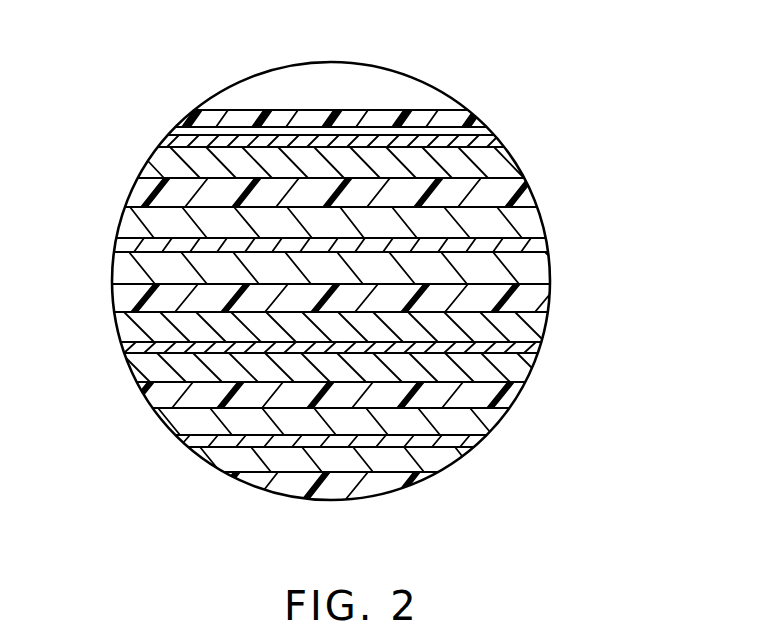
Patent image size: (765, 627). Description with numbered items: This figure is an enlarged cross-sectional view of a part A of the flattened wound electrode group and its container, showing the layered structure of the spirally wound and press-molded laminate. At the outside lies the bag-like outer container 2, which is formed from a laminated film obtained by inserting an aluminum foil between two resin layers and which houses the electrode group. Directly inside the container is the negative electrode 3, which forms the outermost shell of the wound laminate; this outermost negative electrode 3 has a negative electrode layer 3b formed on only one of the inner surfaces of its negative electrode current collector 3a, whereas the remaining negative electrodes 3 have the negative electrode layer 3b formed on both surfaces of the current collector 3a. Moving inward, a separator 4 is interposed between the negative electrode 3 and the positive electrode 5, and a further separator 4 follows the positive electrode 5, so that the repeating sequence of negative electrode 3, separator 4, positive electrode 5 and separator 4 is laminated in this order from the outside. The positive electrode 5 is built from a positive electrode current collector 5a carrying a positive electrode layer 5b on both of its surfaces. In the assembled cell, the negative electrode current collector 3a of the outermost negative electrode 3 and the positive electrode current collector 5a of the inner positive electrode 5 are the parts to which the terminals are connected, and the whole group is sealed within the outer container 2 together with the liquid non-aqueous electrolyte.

The part A is at (231, 101).
The bag-like outer container 2 is at (473, 112).
The negative electrode 3 is at (396, 253).
The negative electrode current collector 3a is at (490, 140).
The negative electrode layer 3b is at (377, 274).
The separator 4 is at (143, 193).
The positive electrode 5 is at (399, 359).
The positive electrode current collector 5a is at (527, 243).
The positive electrode layer 5b is at (520, 213).